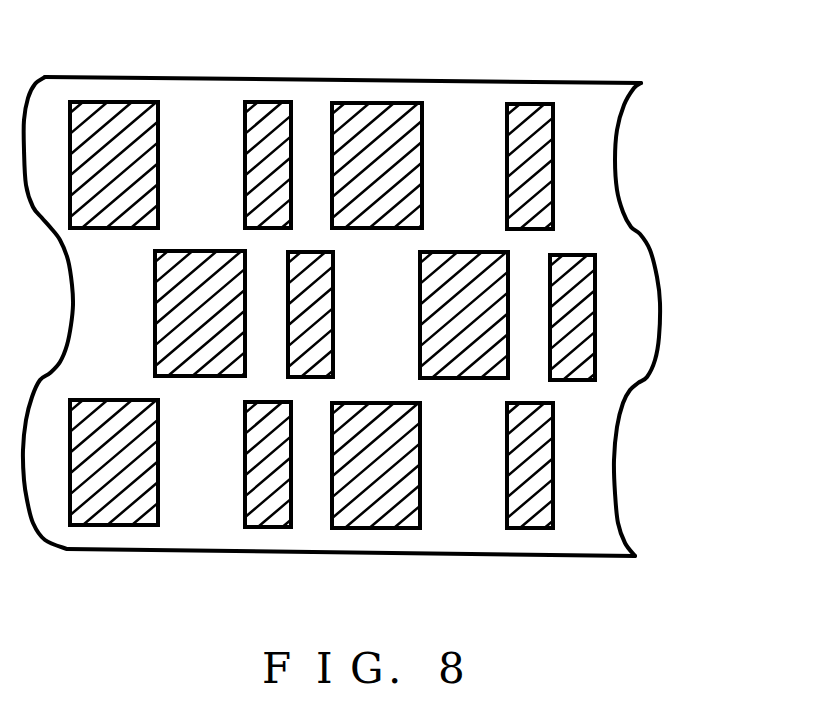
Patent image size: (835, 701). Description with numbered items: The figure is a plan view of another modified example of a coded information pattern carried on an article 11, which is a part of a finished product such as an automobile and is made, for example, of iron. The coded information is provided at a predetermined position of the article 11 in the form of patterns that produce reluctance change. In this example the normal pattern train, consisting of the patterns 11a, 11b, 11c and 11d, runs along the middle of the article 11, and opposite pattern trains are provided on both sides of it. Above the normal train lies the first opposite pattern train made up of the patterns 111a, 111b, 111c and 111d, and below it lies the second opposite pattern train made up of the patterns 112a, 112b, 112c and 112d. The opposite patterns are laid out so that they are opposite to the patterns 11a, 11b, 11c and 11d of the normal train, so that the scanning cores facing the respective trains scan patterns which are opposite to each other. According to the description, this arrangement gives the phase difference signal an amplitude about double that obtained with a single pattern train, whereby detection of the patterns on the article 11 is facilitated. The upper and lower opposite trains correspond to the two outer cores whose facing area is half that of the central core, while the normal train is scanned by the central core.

The article 11 is at (590, 81).
The pattern 11a is at (196, 250).
The pattern 11b is at (335, 270).
The pattern 11c is at (465, 380).
The pattern 11d is at (596, 322).
The opposite pattern 111a is at (110, 100).
The opposite pattern 111b is at (262, 100).
The opposite pattern 111c is at (372, 102).
The opposite pattern 111d is at (524, 103).
The opposite pattern 112a is at (113, 526).
The opposite pattern 112b is at (266, 528).
The opposite pattern 112c is at (378, 529).
The opposite pattern 112d is at (530, 529).